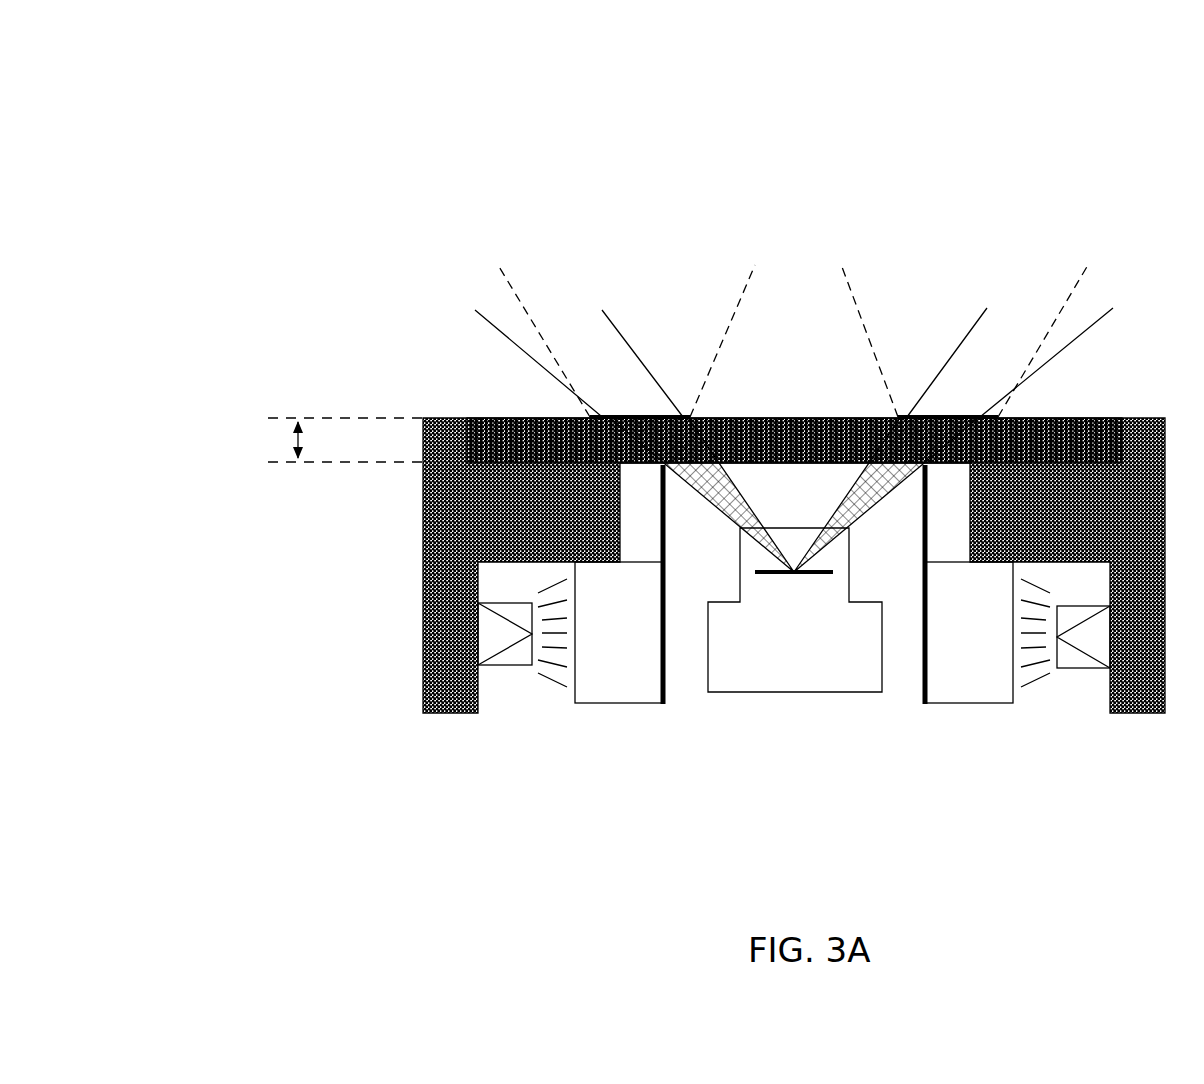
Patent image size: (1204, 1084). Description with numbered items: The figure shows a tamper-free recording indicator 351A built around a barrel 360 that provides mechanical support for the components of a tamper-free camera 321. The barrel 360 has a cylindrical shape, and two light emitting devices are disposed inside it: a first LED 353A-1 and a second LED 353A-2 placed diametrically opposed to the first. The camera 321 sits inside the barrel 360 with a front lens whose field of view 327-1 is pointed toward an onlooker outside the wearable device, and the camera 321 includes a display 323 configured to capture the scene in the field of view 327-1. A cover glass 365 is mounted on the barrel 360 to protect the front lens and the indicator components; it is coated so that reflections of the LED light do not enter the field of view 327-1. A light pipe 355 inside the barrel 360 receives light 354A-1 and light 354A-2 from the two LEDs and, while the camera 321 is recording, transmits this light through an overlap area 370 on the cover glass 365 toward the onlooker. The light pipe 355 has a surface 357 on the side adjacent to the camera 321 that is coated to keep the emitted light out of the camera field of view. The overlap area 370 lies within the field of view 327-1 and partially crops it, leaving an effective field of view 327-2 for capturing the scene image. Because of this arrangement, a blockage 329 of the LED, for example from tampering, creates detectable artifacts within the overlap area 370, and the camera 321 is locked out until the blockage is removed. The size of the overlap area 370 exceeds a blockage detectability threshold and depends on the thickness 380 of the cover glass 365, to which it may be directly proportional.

The recording indicator 351A is at (443, 96).
The barrel 360 is at (794, 565).
The cover glass 365 is at (794, 440).
The blockage 329 is at (794, 495).
The overlap area 370 is at (636, 414).
The field of view 327-1 is at (1079, 338).
The effective field of view 327-2 is at (935, 370).
The thickness 380 is at (297, 433).
The surface 357 is at (917, 673).
The camera 321 is at (795, 610).
The display 323 is at (794, 575).
The light pipe 355 is at (969, 632).
The first light emitting device 353A-1 is at (507, 669).
The light 354A-1 is at (549, 683).
The second light emitting device 353A-2 is at (1090, 670).
The light 354A-2 is at (1034, 688).